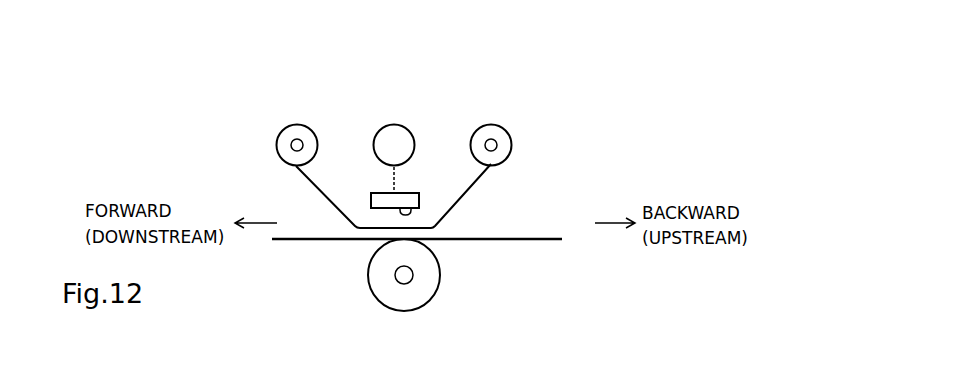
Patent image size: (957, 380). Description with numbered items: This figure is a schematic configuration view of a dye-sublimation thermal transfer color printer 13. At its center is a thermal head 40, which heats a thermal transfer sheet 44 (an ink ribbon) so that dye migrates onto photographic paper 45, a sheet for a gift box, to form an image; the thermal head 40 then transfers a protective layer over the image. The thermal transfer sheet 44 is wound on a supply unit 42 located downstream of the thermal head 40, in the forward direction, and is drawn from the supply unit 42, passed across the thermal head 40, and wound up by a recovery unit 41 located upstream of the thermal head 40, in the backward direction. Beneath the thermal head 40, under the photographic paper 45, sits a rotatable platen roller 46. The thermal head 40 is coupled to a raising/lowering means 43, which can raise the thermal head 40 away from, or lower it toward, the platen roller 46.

The printer 13 is at (590, 126).
The thermal head 40 is at (408, 193).
The recovery unit 41 is at (490, 125).
The supply unit 42 is at (293, 125).
The raising/lowering means 43 is at (392, 125).
The thermal transfer sheet 44 is at (483, 177).
The photographic paper 45 is at (505, 241).
The platen roller 46 is at (428, 278).